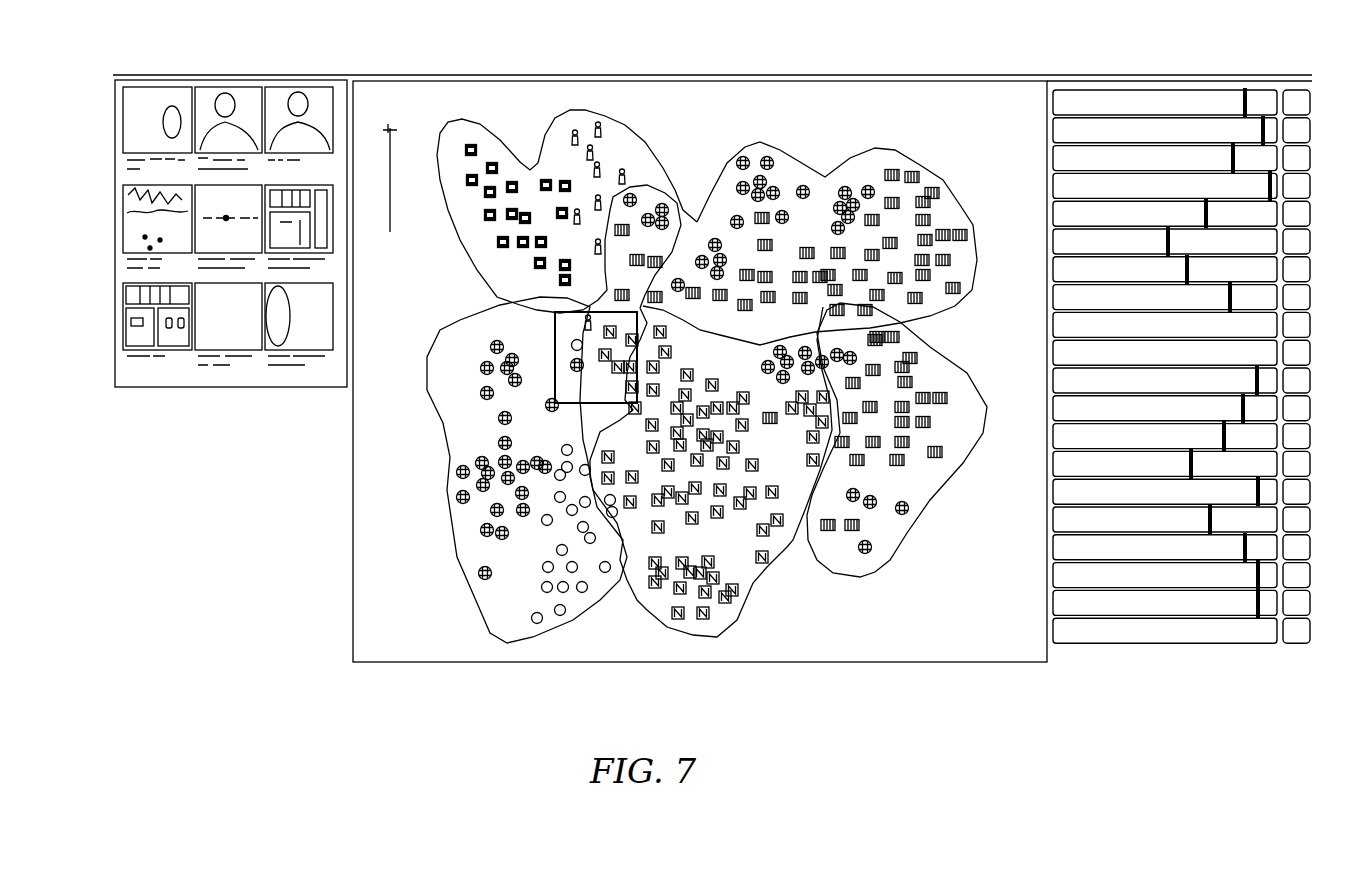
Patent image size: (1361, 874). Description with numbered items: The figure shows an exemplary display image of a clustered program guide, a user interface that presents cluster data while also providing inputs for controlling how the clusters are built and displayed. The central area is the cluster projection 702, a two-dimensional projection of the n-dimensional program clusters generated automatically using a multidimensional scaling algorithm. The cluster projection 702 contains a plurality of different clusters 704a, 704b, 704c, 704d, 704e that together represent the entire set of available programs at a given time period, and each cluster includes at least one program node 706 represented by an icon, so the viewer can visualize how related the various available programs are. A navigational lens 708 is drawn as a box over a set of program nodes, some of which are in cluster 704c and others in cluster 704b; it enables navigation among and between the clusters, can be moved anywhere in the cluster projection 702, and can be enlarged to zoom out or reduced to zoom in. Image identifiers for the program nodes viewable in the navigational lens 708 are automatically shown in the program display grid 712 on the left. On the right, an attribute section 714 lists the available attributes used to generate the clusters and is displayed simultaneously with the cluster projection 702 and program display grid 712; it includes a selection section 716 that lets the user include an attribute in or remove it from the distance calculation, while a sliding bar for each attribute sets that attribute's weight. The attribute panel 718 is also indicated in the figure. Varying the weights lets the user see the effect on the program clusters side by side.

The cluster projection 702 is at (863, 118).
The cluster 704a is at (887, 567).
The cluster 704b is at (753, 593).
The cluster 704c is at (550, 627).
The cluster 704d is at (572, 110).
The cluster 704e is at (748, 125).
The program node 706 is at (707, 620).
The navigational lens 708 is at (555, 403).
The program display grid 712 is at (116, 393).
The attribute section 714 is at (1048, 650).
The selection section 716 is at (1279, 650).
The category filter panel 718 is at (1135, 88).